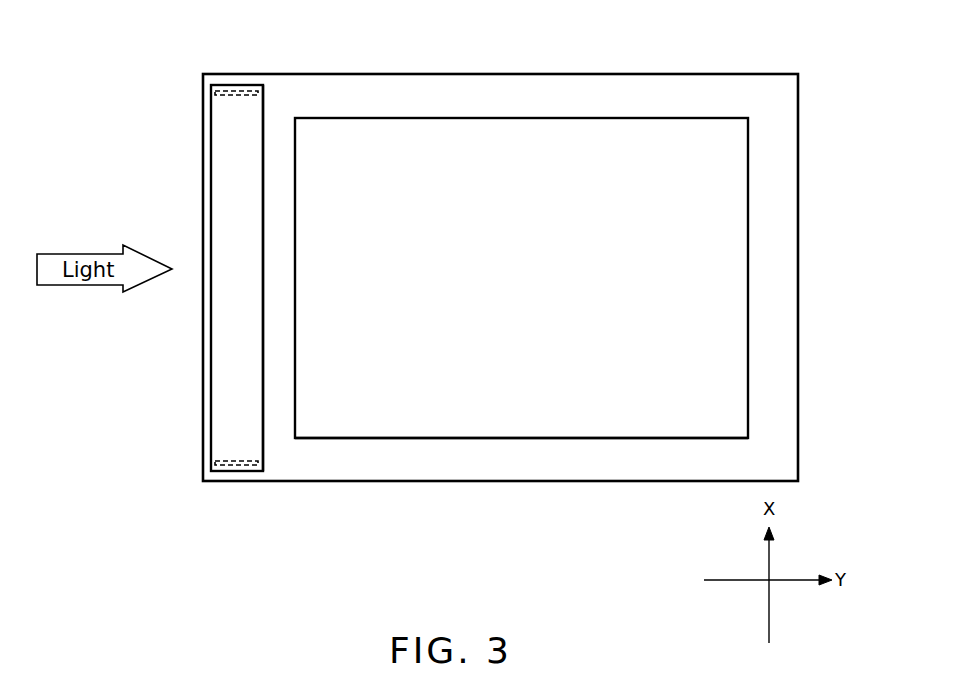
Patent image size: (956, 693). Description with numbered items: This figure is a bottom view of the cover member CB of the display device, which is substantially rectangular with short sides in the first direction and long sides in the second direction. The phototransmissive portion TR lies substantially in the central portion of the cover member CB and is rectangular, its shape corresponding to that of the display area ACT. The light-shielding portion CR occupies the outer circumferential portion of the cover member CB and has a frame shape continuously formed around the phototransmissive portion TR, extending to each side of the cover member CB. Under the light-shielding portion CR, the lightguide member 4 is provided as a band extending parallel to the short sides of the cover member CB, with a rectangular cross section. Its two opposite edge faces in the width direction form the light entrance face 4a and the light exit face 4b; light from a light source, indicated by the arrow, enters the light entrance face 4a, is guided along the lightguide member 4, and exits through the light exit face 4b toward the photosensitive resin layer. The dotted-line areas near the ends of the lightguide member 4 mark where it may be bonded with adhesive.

The cover member CB is at (787, 66).
The light-shielding portion CR is at (620, 104).
The phototransmissive portion TR is at (543, 153).
The display area ACT is at (580, 438).
The lightguide member 4 is at (211, 157).
The light entrance face 4a is at (211, 118).
The light exit face 4b is at (263, 189).